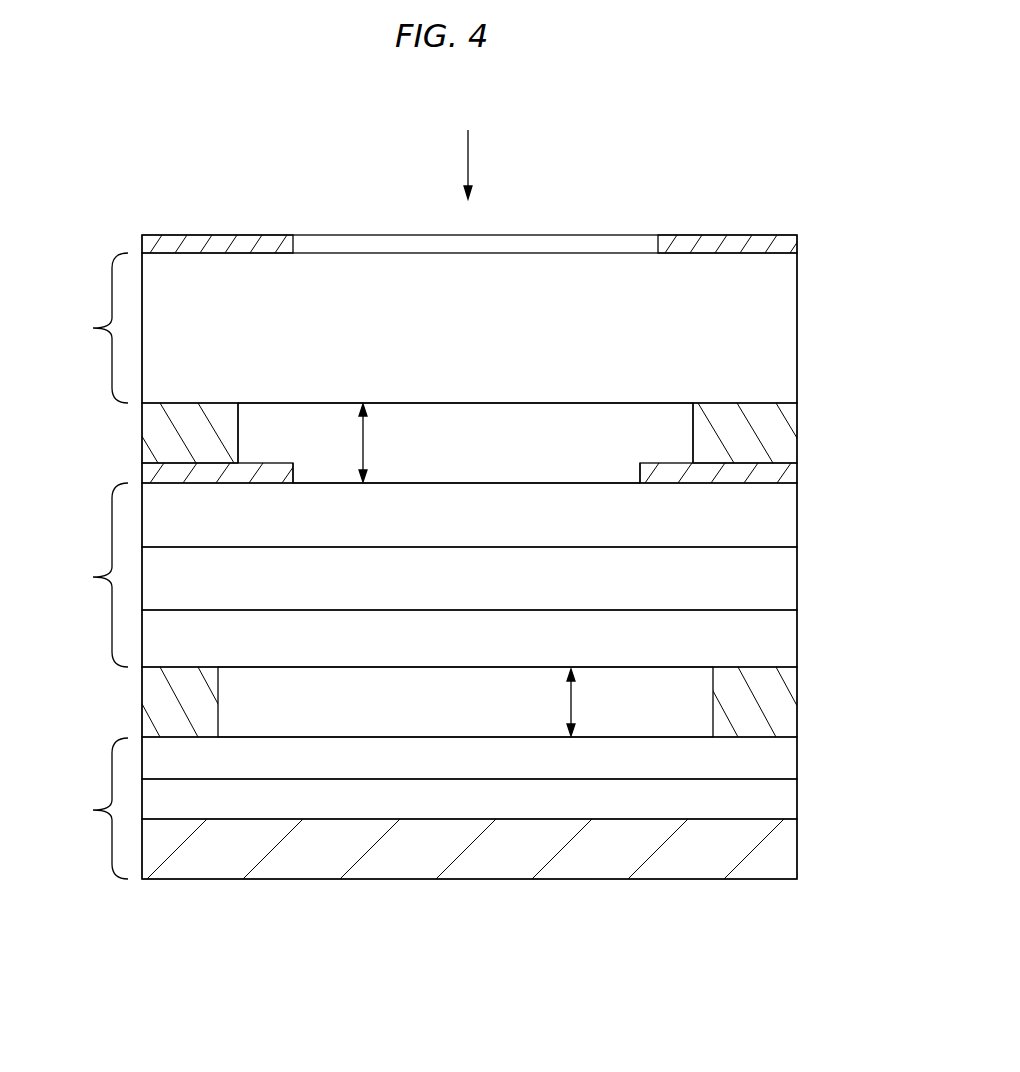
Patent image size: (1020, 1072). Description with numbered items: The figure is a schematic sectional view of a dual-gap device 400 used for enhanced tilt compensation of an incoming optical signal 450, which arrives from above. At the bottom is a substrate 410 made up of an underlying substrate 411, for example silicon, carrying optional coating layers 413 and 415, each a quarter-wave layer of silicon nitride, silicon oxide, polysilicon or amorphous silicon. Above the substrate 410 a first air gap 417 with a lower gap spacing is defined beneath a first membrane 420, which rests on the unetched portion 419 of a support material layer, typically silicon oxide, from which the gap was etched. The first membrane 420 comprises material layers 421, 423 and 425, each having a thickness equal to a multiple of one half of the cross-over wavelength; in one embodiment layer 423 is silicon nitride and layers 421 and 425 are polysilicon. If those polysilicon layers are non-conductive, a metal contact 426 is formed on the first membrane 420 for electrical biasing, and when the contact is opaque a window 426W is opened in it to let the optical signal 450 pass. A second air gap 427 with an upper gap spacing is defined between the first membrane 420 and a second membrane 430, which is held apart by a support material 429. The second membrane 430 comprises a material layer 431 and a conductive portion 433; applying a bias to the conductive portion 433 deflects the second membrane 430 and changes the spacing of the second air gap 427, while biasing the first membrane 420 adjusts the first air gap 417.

The dual-gap device 400 is at (469, 606).
The substrate 410 is at (92, 808).
The underlying substrate 411 is at (780, 848).
The coating layer 413 is at (780, 797).
The coating layer 415 is at (780, 760).
The first air gap 417 is at (465, 702).
The unetched portion of the support material layer 419 is at (780, 704).
The first membrane 420 is at (92, 575).
The material layer 421 is at (780, 640).
The material layer 423 is at (780, 580).
The material layer 425 is at (780, 517).
The metal contact 426 is at (780, 474).
The window 426W is at (596, 470).
The second air gap 427 is at (465, 443).
The support material 429 is at (780, 435).
The second membrane 430 is at (92, 328).
The material layer 431 is at (780, 330).
The conductive portion 433 is at (780, 247).
The optical signal 450 is at (488, 164).